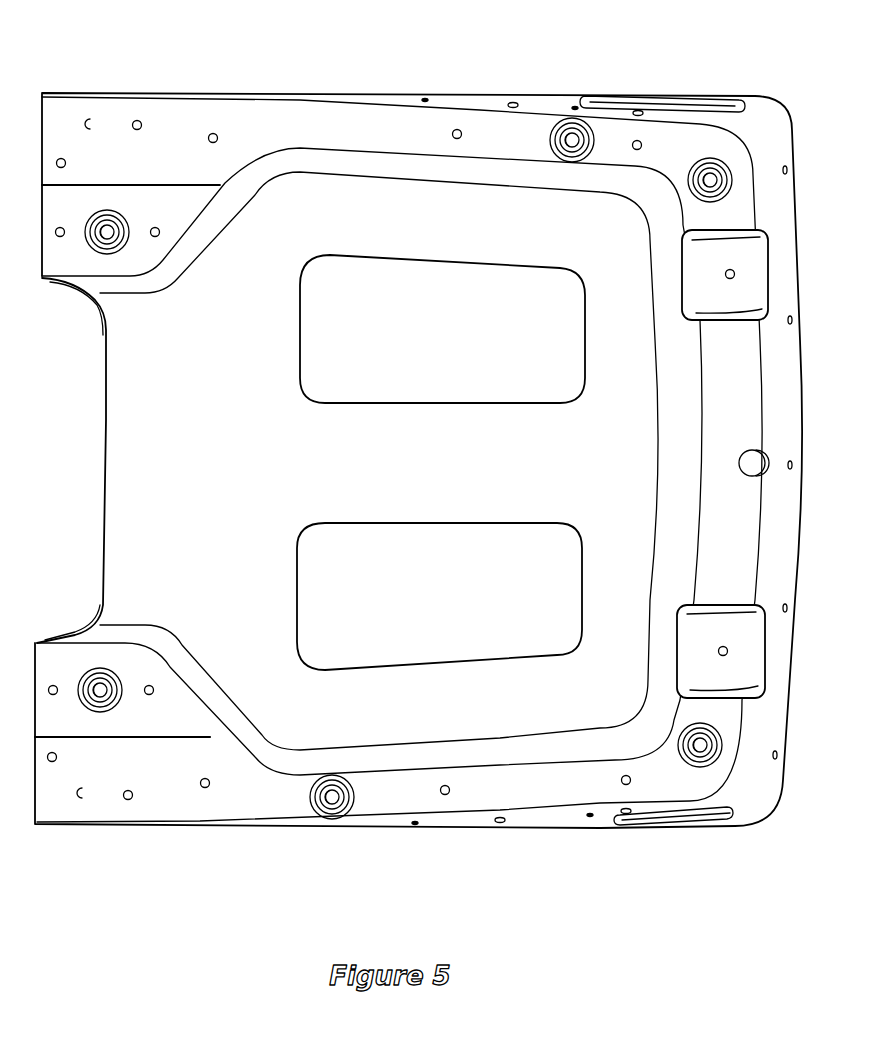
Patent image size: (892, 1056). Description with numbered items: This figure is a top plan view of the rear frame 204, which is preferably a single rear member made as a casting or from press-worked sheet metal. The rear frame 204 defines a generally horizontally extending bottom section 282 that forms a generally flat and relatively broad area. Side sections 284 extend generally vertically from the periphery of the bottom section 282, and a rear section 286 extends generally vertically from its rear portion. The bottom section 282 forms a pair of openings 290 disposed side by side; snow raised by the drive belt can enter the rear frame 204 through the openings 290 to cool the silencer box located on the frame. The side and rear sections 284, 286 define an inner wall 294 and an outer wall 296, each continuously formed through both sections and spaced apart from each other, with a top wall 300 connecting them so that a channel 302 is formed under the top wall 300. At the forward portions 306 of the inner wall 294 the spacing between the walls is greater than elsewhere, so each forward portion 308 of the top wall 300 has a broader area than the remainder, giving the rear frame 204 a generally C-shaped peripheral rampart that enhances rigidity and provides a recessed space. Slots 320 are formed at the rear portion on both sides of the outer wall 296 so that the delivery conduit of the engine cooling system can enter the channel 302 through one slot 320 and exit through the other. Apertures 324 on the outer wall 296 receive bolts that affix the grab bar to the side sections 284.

The rear frame 204 is at (548, 88).
The bottom section 282 is at (379, 461).
The side sections 284 is at (398, 97).
The rear section 286 is at (790, 405).
The openings 290 is at (441, 462).
The inner wall 294 is at (670, 490).
The outer wall 296 is at (480, 97).
The top wall 300 is at (748, 530).
The channel 302 is at (262, 120).
The forward portions of the inner wall 306 is at (118, 287).
The forward portion of the top wall 308 is at (157, 118).
The slots 320 is at (700, 106).
The apertures 324 is at (517, 100).